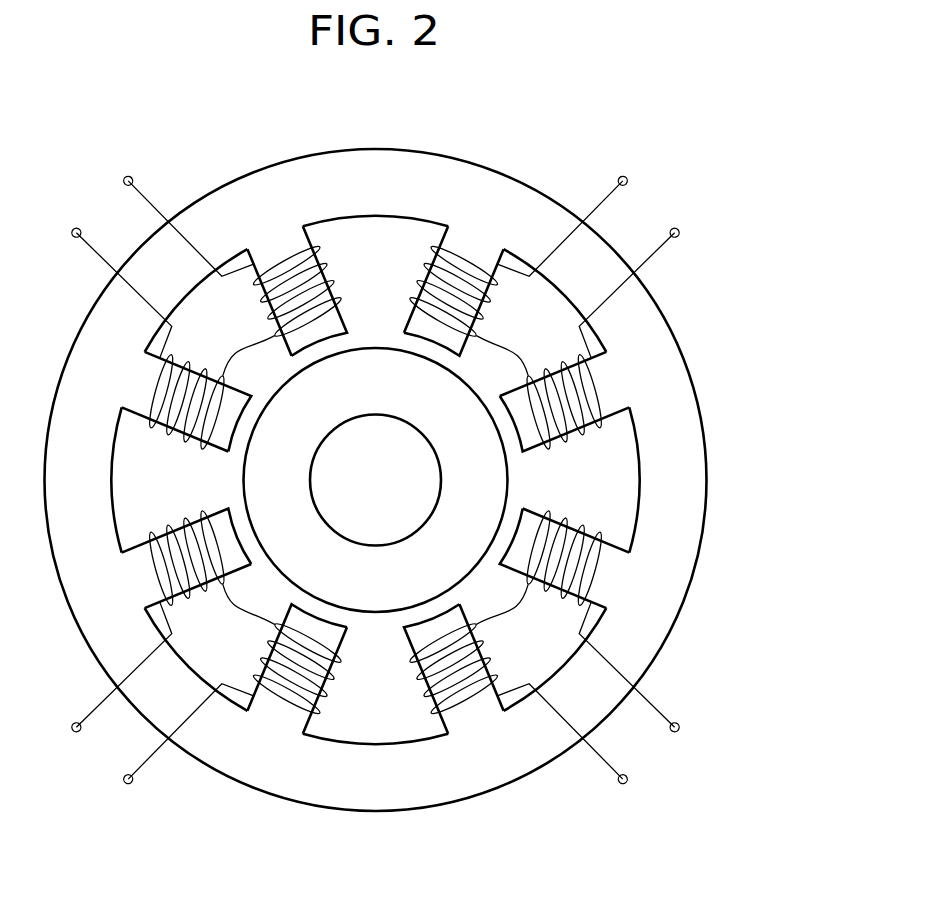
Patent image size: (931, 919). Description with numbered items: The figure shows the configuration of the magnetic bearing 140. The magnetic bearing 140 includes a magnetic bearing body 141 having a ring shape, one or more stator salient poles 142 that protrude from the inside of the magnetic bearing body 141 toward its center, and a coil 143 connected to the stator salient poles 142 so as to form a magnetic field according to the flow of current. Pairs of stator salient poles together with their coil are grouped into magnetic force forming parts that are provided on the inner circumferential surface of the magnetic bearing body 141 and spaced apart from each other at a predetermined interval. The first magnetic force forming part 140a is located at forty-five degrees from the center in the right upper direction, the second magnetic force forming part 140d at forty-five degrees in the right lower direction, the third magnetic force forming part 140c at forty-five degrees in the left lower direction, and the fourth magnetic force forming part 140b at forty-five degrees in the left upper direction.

The magnetic bearing 140 is at (526, 141).
The first magnetic force forming part 140a is at (577, 277).
The fourth magnetic force forming part 140b is at (173, 281).
The third magnetic force forming part 140c is at (175, 683).
The second magnetic force forming part 140d is at (576, 683).
The magnetic bearing body 141 is at (698, 420).
The stator salient pole 142 is at (533, 523).
The coil 143 is at (512, 607).